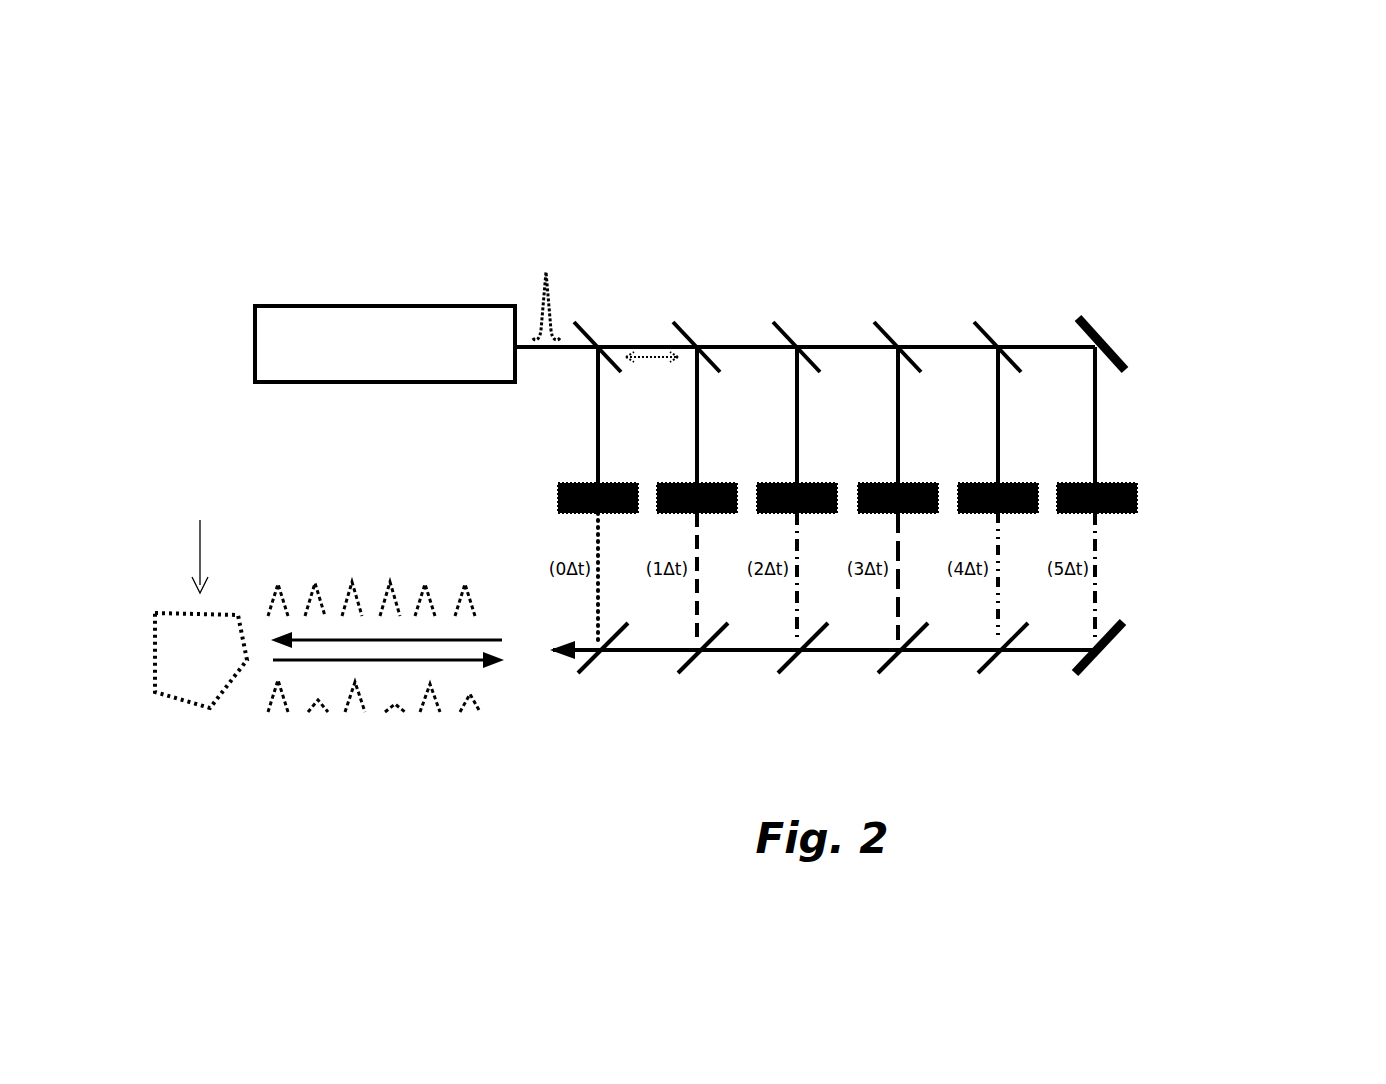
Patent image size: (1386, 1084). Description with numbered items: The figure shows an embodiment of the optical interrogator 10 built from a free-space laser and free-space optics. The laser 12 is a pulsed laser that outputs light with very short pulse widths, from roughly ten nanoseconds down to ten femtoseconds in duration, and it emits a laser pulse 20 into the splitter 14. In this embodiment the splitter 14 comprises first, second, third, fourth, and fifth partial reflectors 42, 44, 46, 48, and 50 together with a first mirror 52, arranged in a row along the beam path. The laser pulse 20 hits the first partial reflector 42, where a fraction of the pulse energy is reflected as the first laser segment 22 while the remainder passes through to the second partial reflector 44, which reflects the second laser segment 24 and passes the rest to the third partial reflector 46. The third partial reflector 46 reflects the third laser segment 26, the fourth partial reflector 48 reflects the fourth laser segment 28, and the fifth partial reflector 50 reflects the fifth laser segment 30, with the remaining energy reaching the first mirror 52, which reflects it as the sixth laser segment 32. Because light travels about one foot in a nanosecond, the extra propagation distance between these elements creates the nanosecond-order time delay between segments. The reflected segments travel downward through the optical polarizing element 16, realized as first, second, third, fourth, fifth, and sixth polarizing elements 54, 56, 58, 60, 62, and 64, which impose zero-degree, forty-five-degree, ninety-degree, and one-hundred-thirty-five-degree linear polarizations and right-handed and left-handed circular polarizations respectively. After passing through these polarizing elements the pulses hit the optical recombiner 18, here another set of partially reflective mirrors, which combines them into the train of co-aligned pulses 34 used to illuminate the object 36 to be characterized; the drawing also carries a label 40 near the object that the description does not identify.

The optical interrogator 10 is at (290, 185).
The laser 12 is at (457, 383).
The splitter 14 is at (962, 316).
The optical polarizing element 16 is at (1153, 458).
The optical recombiner 18 is at (1150, 605).
The laser pulse 20 is at (546, 266).
The first laser segment 22 is at (597, 455).
The second laser segment 24 is at (697, 455).
The third laser segment 26 is at (797, 455).
The fourth laser segment 28 is at (898, 455).
The fifth laser segment 30 is at (998, 455).
The sixth laser segment 32 is at (1095, 455).
The train of co-aligned pulses 34 is at (495, 635).
The object 36 is at (207, 703).
The received pulse train 40 is at (480, 665).
The first partial reflector 42 is at (583, 325).
The second partial reflector 44 is at (680, 325).
The third partial reflector 46 is at (782, 350).
The fourth partial reflector 48 is at (882, 350).
The fifth partial reflector 50 is at (983, 320).
The first mirror 52 is at (1083, 317).
The first polarizing element 54 is at (558, 516).
The second polarizing element 56 is at (657, 516).
The third polarizing element 58 is at (757, 516).
The fourth polarizing element 60 is at (858, 516).
The fifth polarizing element 62 is at (958, 516).
The sixth polarizing element 64 is at (1057, 516).